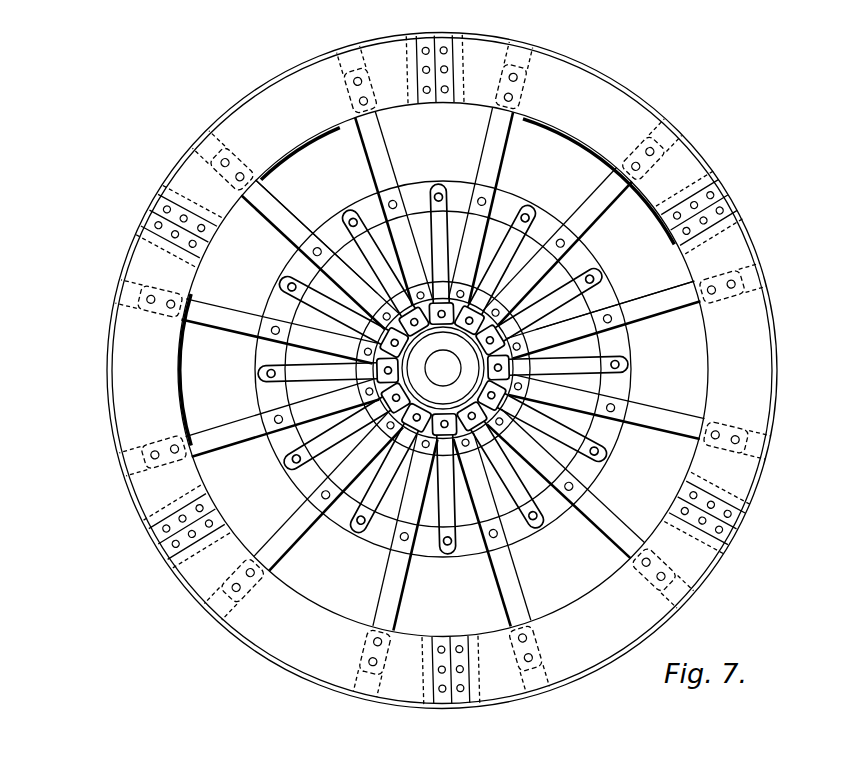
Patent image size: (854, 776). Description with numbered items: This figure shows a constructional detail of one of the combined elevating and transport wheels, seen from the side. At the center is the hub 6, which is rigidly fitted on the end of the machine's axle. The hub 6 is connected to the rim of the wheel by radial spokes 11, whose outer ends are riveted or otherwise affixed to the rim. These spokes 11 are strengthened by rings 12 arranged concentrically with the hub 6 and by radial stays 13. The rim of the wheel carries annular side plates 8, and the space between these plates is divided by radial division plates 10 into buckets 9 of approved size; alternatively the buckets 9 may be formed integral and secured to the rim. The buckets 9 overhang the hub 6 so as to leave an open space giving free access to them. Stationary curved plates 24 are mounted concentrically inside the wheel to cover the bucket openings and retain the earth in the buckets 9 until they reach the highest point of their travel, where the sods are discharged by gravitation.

The hub 6 is at (468, 360).
The annular side plate 8 is at (442, 371).
The bucket 9 is at (465, 102).
The radial division plate 10 is at (313, 142).
The radial spoke 11 is at (394, 171).
The ring 12 is at (257, 397).
The radial stay 13 is at (443, 369).
The stationary curved plate 24 is at (277, 177).